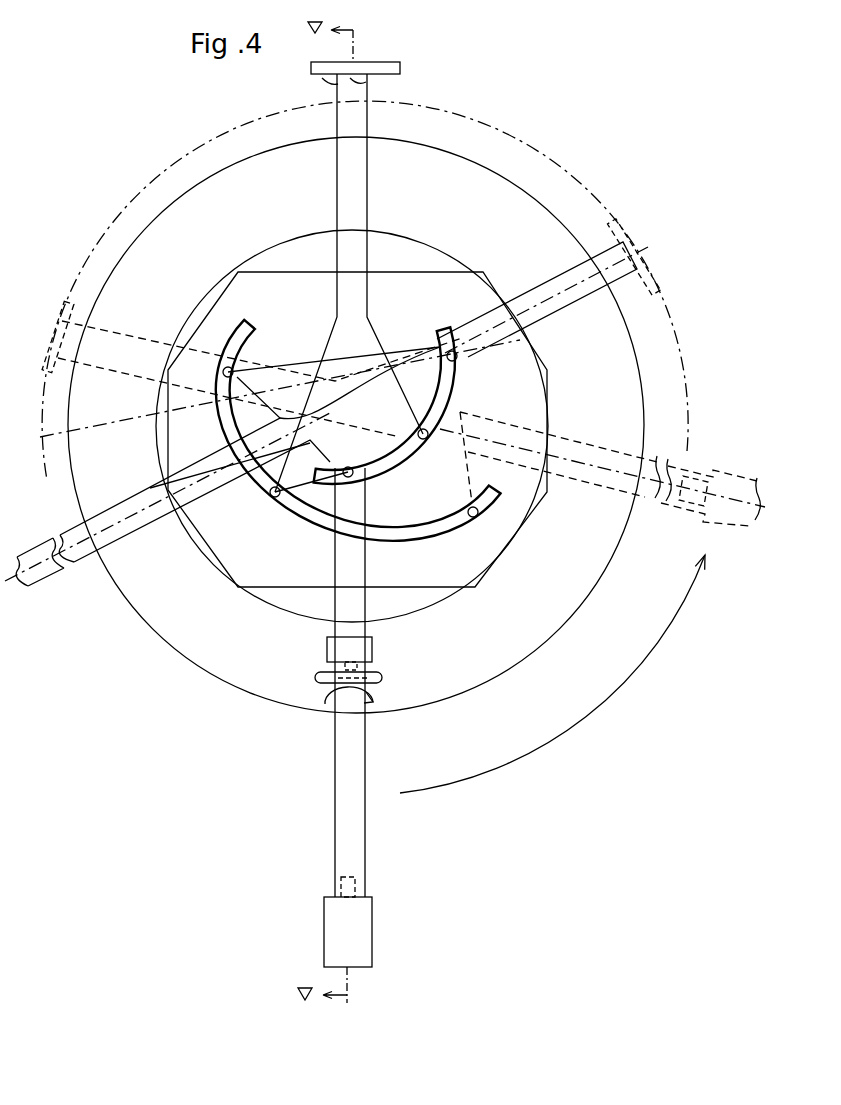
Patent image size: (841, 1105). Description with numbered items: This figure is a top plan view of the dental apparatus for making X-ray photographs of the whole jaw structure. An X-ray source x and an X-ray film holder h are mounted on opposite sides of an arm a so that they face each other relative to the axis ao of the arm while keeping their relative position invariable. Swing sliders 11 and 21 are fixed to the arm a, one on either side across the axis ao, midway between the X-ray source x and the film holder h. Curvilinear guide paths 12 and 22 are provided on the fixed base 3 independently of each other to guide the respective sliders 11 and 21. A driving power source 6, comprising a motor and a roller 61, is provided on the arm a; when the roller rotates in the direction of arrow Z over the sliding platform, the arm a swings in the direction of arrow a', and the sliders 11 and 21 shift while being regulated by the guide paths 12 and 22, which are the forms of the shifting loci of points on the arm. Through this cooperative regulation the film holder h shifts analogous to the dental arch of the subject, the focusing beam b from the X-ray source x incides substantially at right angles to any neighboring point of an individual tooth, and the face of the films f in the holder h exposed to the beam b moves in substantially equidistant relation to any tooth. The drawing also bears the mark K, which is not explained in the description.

The base 3 is at (310, 573).
The driving power source 6 is at (372, 652).
The roller 61 is at (382, 678).
The swing slider 11 is at (268, 499).
The curvilinear guide path 12 is at (303, 508).
The swing slider 21 is at (422, 448).
The curvilinear guide path 22 is at (392, 448).
The X-ray film holder h is at (400, 70).
The focusing beam b is at (398, 84).
The films f is at (322, 80).
The arm a is at (364, 682).
The axis of the arm ao is at (357, 785).
The arrow indicating arm swing direction a' is at (411, 438).
The rotation angle K is at (552, 674).
The arrow indicating roller rotation direction Z is at (373, 704).
The X-ray source x is at (365, 928).